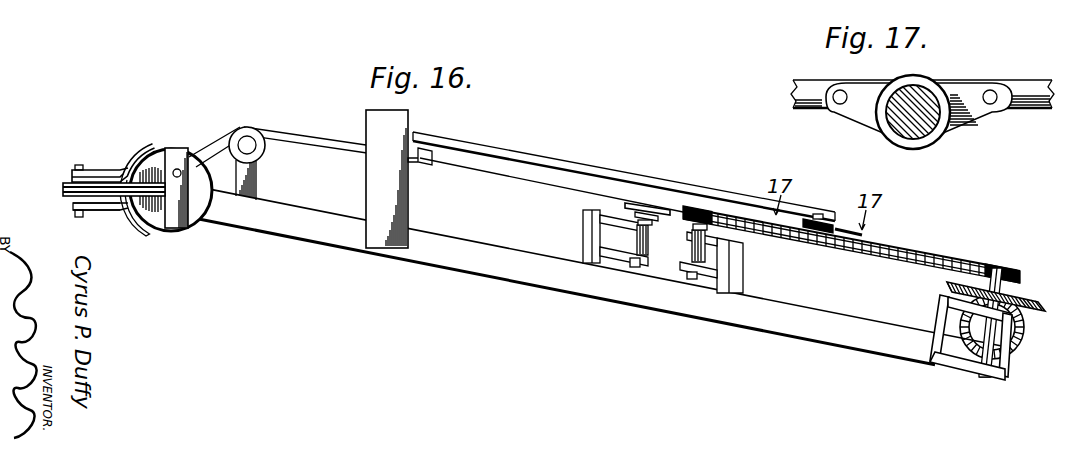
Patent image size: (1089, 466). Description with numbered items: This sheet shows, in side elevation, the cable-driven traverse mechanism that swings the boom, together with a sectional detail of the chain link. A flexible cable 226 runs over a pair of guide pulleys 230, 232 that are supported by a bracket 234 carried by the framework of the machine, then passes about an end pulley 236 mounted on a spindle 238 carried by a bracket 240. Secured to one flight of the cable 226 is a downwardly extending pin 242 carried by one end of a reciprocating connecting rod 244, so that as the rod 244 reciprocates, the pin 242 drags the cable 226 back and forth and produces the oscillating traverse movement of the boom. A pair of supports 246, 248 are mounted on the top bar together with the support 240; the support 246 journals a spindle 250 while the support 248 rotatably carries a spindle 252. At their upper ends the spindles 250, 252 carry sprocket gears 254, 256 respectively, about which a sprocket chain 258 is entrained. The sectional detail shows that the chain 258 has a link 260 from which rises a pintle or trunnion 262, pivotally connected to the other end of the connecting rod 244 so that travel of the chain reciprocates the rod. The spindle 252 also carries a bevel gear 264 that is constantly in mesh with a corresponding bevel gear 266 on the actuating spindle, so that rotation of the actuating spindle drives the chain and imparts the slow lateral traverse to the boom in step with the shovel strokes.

In FIG. 16, the flexible cable 226 is at (284, 132).
In FIG. 16, the guide pulley 230 is at (65, 187).
In FIG. 16, the guide pulley 232 is at (70, 208).
In FIG. 16, the bracket 234 is at (108, 168).
In FIG. 16, the end pulley 236 is at (647, 203).
In FIG. 16, the spindle 238 is at (633, 250).
In FIG. 16, the bracket 240 is at (583, 235).
In FIG. 16, the pin 242 is at (433, 158).
In FIG. 16, the connecting rod 244 is at (533, 155).
In FIG. 16, the support 246 is at (737, 267).
In FIG. 16, the support 248 is at (937, 316).
In FIG. 16, the spindle 250 is at (703, 250).
In FIG. 16, the spindle 252 is at (1012, 342).
In FIG. 16, the sprocket gear 254 is at (698, 212).
In FIG. 16, the sprocket gear 256 is at (998, 274).
In FIG. 16, the sprocket chain 258 is at (903, 247).
In FIG. 17, the sprocket chain 258 is at (1036, 92).
In FIG. 17, the link 260 is at (967, 95).
In FIG. 16, the pintle or trunnion 262 is at (812, 213).
In FIG. 17, the pintle or trunnion 262 is at (925, 133).
In FIG. 16, the bevel gear 264 is at (1033, 298).
In FIG. 16, the bevel gear 266 is at (1025, 320).